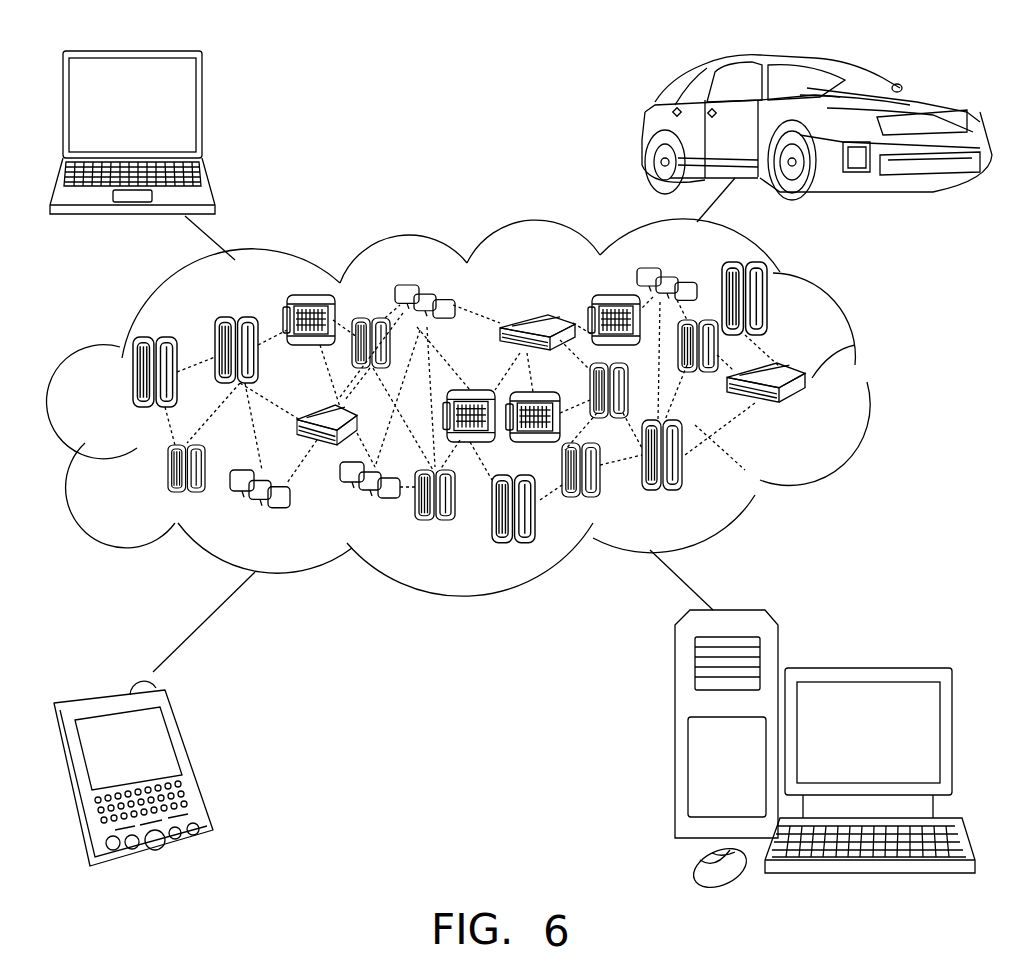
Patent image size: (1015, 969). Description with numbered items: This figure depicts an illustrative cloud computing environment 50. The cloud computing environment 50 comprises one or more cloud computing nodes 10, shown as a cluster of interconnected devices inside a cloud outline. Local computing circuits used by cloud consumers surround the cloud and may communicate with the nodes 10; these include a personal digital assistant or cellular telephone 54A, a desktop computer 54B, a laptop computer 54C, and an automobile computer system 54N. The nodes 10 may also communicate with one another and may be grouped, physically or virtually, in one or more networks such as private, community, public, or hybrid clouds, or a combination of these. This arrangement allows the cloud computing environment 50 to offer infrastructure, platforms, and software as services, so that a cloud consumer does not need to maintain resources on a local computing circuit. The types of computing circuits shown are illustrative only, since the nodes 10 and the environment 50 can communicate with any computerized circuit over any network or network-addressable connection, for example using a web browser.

The cloud computing nodes 10 is at (806, 411).
The cloud computing environment 50 is at (867, 382).
The personal digital assistant (PDA) or cellular telephone 54A is at (190, 762).
The desktop computer 54B is at (865, 668).
The laptop computer 54C is at (200, 112).
The automobile computer system 54N is at (645, 130).